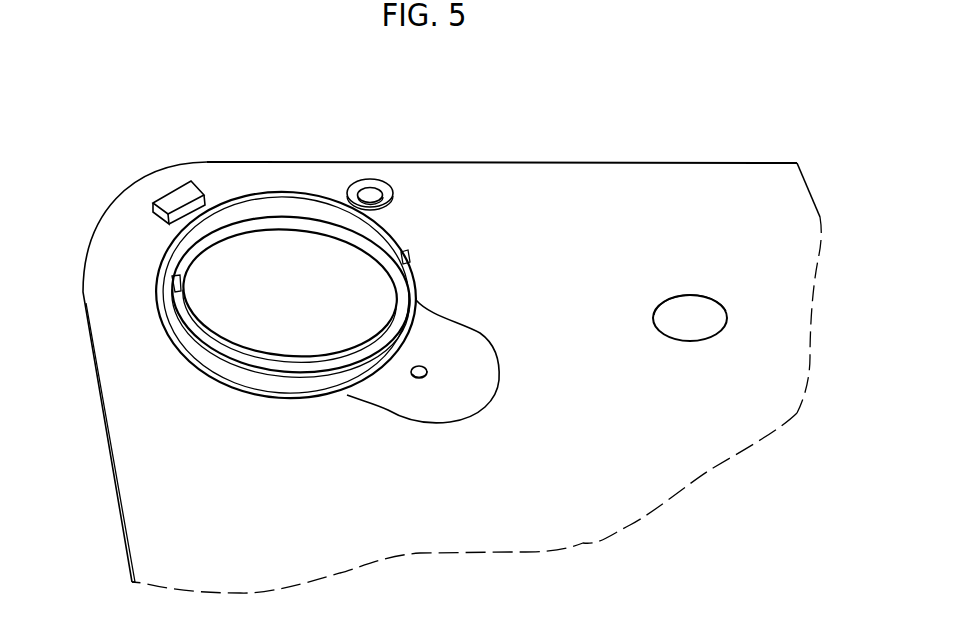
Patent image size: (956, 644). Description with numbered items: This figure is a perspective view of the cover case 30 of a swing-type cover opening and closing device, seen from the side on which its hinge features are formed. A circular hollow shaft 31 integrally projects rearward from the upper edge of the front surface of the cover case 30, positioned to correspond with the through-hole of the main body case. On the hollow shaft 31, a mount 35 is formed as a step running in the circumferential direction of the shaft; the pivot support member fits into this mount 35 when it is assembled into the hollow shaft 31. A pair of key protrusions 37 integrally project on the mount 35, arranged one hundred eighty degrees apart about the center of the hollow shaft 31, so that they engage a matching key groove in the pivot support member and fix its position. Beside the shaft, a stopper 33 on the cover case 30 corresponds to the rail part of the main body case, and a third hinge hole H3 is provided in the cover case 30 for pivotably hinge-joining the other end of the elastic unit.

The cover case 30 is at (613, 163).
The circular hollow shaft 31 is at (291, 186).
The stopper 33 is at (178, 195).
The mount 35 is at (207, 348).
The key protrusion 37 is at (173, 279).
The third hinge hole H3 is at (424, 366).